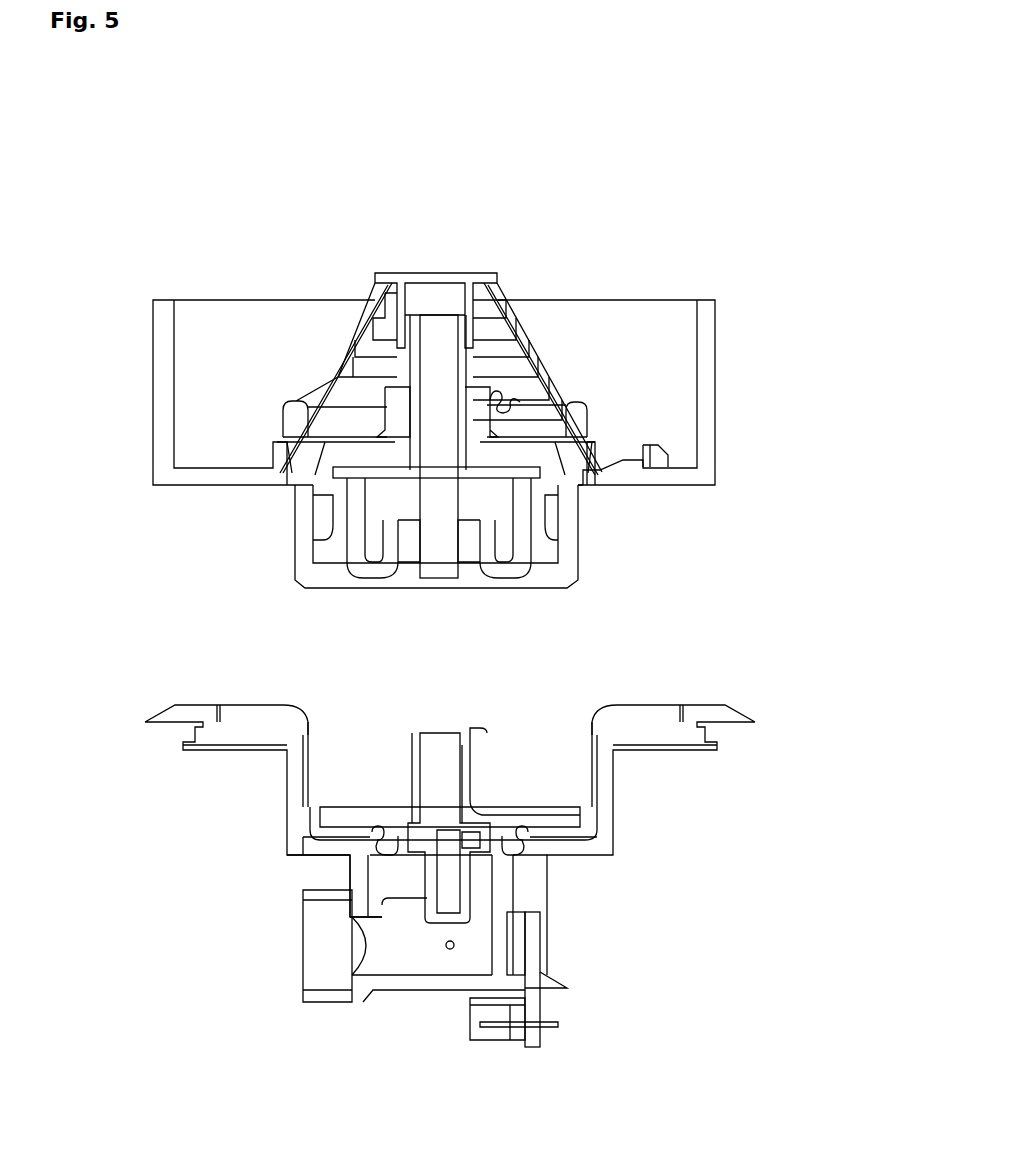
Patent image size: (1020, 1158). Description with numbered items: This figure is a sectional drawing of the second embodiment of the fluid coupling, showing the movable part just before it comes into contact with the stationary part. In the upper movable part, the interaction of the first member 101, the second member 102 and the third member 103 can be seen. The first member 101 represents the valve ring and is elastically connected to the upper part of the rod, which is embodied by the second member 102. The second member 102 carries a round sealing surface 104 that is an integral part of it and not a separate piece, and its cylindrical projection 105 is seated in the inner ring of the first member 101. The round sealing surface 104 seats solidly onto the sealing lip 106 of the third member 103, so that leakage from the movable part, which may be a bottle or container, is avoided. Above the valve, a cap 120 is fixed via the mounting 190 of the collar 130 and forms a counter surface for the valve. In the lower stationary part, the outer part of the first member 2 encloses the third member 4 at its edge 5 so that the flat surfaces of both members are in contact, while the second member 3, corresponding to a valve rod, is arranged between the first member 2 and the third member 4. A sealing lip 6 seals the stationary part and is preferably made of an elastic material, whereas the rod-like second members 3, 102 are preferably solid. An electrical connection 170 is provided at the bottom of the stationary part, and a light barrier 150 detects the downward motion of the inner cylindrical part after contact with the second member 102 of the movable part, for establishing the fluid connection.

The cap 120 is at (465, 272).
The second member 102 is at (445, 338).
The cylindrical projection 105 is at (468, 427).
The first member 101 is at (545, 413).
The collar 130 is at (710, 428).
The mounting 190 is at (653, 457).
The sealing lip 106 is at (477, 477).
The round sealing surface 104 is at (525, 477).
The third member 103 is at (505, 570).
The third member 4 is at (582, 820).
The edge 5 is at (522, 827).
The second member 3 is at (452, 878).
The sealing lip 6 is at (340, 828).
The first member 2 is at (440, 922).
The light barrier 150 is at (448, 950).
The electrical connection 170 is at (483, 1040).